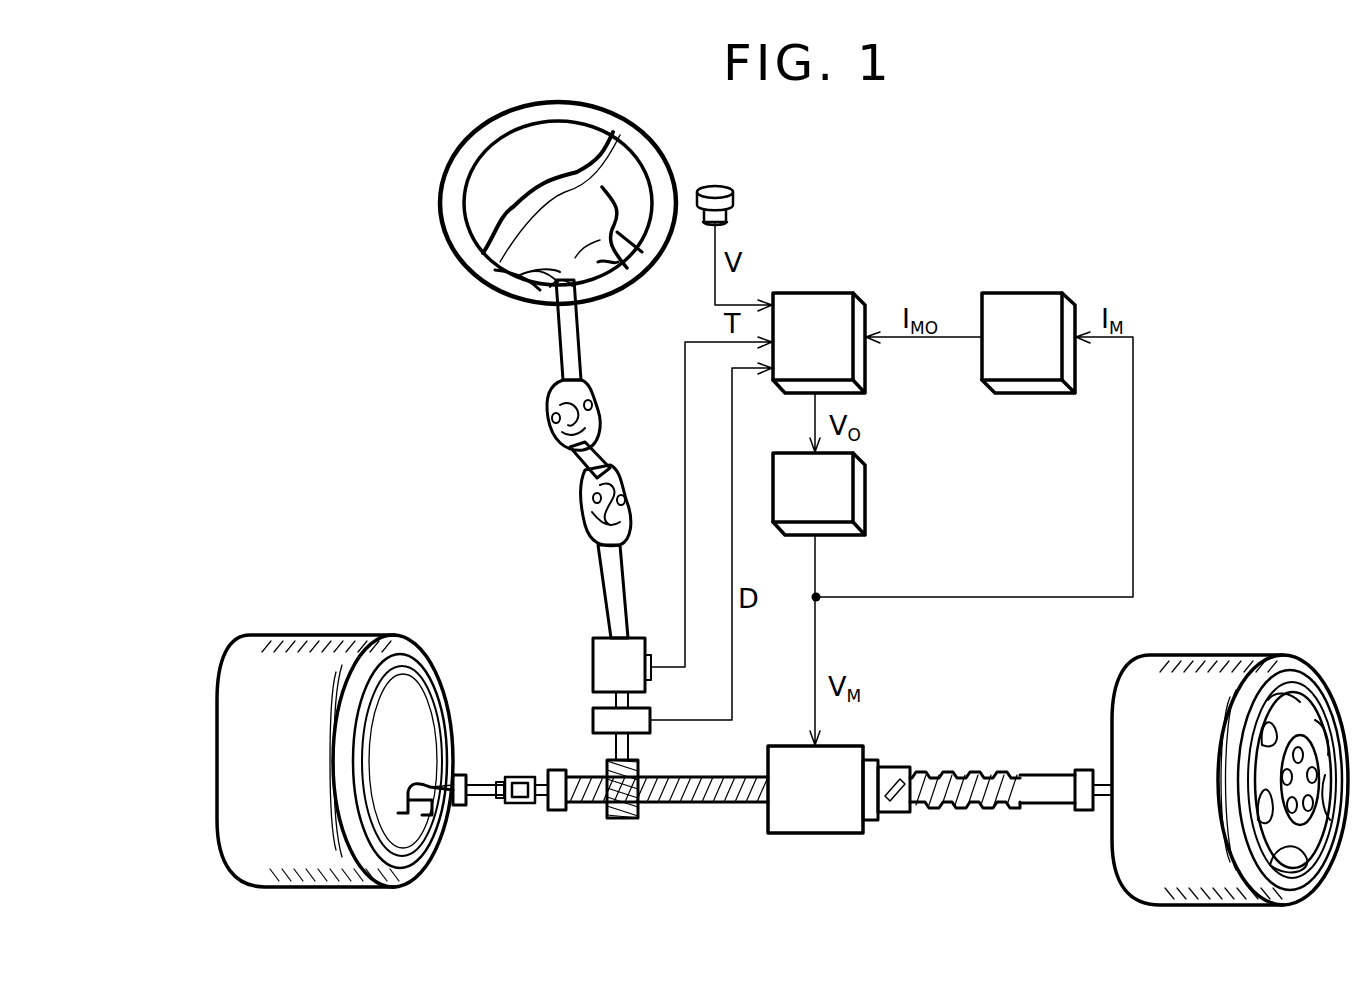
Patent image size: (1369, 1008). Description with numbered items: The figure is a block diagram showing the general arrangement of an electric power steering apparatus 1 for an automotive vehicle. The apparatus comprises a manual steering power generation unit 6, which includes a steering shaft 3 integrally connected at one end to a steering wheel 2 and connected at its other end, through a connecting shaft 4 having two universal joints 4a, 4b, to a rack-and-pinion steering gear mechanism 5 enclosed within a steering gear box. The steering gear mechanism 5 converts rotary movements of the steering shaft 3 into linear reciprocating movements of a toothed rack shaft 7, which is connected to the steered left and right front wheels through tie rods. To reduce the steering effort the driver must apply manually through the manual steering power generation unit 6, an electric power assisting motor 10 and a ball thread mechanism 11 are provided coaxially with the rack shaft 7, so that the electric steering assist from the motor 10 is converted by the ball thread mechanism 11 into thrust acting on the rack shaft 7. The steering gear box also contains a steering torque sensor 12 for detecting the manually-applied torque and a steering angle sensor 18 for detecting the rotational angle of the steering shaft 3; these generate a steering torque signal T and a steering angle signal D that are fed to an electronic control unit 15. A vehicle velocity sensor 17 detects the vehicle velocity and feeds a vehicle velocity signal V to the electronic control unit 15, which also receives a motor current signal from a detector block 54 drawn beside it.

The electric power steering apparatus 1 is at (1078, 147).
The steering wheel 2 is at (458, 163).
The steering shaft 3 is at (560, 338).
The connecting shaft 4 is at (600, 452).
The universal joint 4a is at (585, 392).
The universal joint 4b is at (608, 477).
The rack-and-pinion steering gear mechanism 5 is at (625, 818).
The manual steering power generation unit 6 is at (495, 402).
The rack shaft 7 is at (1050, 795).
The electric power assisting motor 10 is at (819, 833).
The ball thread mechanism 11 is at (983, 756).
The steering torque sensor 12 is at (594, 663).
The electronic control unit 15 is at (812, 293).
The vehicle velocity sensor 17 is at (719, 182).
The steering angle sensor 18 is at (593, 720).
The motor current detector 54 is at (1022, 293).